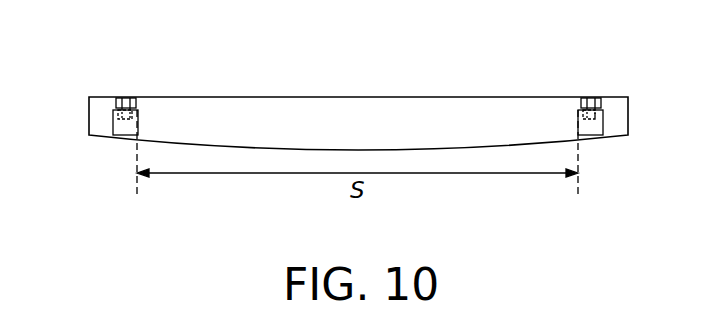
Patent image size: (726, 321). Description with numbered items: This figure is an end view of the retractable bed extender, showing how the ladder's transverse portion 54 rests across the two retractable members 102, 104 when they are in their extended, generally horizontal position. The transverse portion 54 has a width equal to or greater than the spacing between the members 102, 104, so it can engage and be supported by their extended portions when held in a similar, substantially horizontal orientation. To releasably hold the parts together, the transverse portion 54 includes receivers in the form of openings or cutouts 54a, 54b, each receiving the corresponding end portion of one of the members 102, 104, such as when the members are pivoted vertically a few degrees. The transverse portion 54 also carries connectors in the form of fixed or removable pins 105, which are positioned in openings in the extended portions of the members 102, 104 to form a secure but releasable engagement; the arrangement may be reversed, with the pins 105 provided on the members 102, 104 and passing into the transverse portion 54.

The transverse portion 54 is at (359, 113).
The cutout 54a is at (113, 118).
The cutout 54b is at (603, 118).
The retractable member 102 is at (125, 125).
The retractable member 104 is at (590, 125).
The pin 105 is at (126, 93).